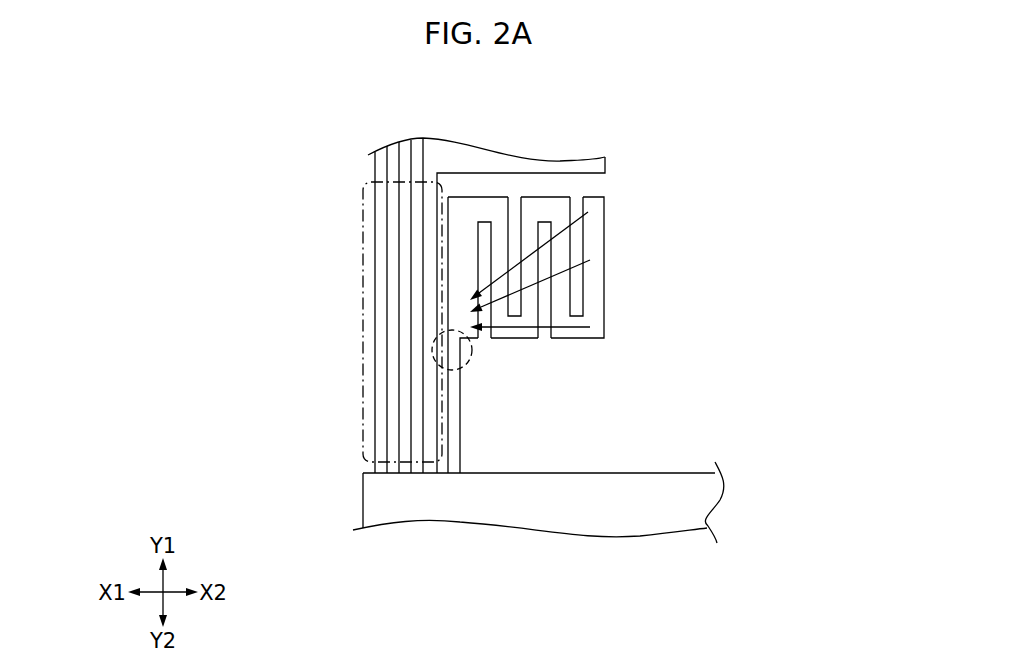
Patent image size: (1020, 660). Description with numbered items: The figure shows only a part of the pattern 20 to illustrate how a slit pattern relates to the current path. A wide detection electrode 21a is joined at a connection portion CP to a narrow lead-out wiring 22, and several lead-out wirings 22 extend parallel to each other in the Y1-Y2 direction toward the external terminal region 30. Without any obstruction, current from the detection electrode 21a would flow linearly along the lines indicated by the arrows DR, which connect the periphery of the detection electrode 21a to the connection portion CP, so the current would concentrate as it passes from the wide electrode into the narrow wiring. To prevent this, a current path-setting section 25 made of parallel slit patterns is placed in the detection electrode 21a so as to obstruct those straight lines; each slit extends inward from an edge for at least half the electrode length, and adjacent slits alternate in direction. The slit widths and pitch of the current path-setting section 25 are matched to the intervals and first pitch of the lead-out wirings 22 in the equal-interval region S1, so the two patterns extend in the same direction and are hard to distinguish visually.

The pattern 20 is at (320, 158).
The detection electrode 21a is at (600, 162).
The lead-out wiring 22 is at (380, 232).
The current path-setting section 25 is at (485, 318).
The external terminal region 30 is at (383, 505).
The connection portion CP is at (472, 360).
The arrows (current direction lines) DR is at (474, 279).
The equal-interval region S1 is at (363, 438).